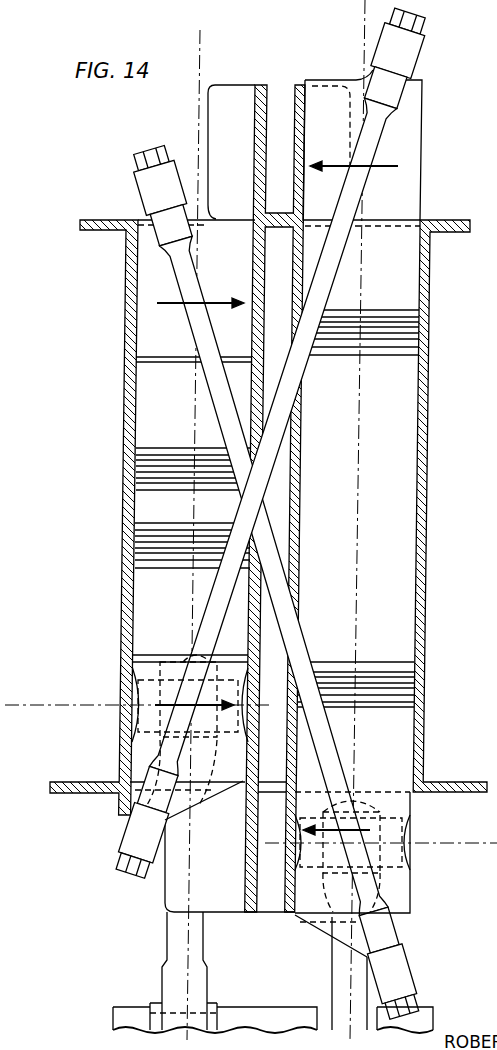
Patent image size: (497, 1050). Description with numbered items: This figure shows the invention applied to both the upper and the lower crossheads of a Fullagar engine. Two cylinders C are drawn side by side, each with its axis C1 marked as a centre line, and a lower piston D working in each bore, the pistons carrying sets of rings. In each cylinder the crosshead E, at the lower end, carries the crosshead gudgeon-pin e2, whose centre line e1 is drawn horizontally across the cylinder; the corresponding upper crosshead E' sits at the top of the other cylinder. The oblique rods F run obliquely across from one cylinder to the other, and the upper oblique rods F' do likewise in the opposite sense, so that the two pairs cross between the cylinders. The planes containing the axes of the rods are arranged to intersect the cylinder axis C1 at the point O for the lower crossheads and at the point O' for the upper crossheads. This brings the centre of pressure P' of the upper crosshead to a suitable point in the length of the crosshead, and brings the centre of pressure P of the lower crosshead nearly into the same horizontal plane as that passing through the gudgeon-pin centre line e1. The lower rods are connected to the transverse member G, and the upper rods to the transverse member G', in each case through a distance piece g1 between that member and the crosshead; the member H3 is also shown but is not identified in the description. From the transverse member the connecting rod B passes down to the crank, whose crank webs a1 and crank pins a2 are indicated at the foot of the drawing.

The cylinder axis C1 is at (203, 46).
The piston rod guide H3 is at (208, 116).
The upper crosshead E' is at (272, 191).
The centre of pressure of upper crosshead P' is at (277, 225).
The intersection point for upper crossheads O' is at (282, 258).
The lower piston D is at (142, 400).
The cylinders C is at (125, 467).
The upper oblique rods F' is at (261, 531).
The oblique rods F is at (288, 392).
The intersection point for lower crossheads O is at (245, 766).
The crosshead gudgeon-pin e2 is at (135, 670).
The centre line of gudgeon-pin e1 is at (251, 770).
The centre of pressure of lower crossheads P is at (270, 764).
The crosshead E is at (264, 788).
The distance piece g1 is at (192, 793).
The transverse member G is at (126, 822).
The connecting rod B is at (173, 940).
The crank pins a2 is at (172, 1010).
The crank webs a1 is at (120, 1015).
The upper transverse member G' is at (404, 963).